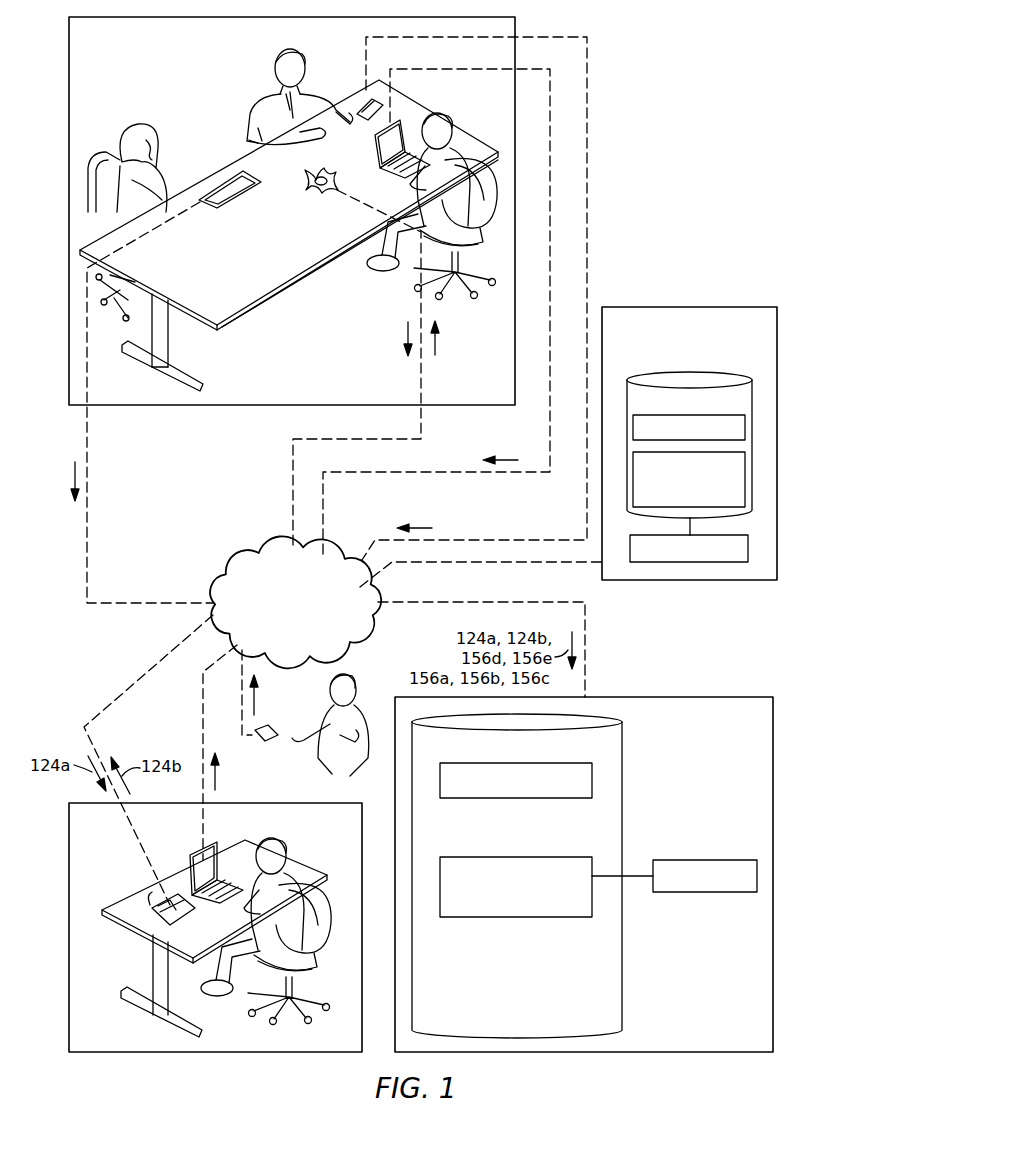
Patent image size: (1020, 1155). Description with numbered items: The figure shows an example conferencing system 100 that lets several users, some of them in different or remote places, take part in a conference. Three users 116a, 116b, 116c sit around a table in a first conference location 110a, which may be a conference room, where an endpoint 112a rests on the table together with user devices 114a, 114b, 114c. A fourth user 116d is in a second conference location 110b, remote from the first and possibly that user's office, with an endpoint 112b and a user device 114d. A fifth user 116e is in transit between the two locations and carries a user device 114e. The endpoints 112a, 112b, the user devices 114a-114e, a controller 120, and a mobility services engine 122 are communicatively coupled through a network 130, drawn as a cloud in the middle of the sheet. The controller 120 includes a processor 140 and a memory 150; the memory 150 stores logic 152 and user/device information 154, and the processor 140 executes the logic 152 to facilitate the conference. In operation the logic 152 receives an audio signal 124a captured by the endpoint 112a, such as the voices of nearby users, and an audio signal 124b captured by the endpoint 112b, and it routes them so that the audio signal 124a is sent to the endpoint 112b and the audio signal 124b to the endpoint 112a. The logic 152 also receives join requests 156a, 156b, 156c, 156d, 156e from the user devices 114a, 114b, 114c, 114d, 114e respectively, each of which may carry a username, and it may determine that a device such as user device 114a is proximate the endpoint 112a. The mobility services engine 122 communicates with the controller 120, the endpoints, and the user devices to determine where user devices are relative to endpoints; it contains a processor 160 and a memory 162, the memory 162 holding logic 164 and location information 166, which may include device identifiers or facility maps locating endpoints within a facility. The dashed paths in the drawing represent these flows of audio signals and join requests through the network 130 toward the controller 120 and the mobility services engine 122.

The conferencing system 100 is at (684, 54).
The first conference location 110a is at (124, 54).
The second conference location 110b is at (124, 1044).
The endpoint 112a is at (326, 194).
The endpoint 112b is at (150, 905).
The user device 114a is at (355, 100).
The user device 114b is at (216, 172).
The user device 114c is at (394, 115).
The user device 114d is at (190, 860).
The user device 114e is at (276, 745).
The user 116a is at (271, 80).
The user 116b is at (131, 124).
The user 116c is at (463, 140).
The user 116d is at (283, 850).
The fifth user 116e is at (348, 684).
The controller 120 is at (712, 785).
The mobility services engine 122 is at (690, 306).
The audio signal 124a is at (404, 337).
The audio signal 124b is at (438, 344).
The network 130 is at (310, 624).
The processor 140 is at (702, 893).
The memory 150 is at (622, 953).
The logic 152 is at (455, 799).
The user/device information 154 is at (515, 918).
The join request 156a is at (416, 526).
The join request 156b is at (72, 470).
The join request 156c is at (500, 458).
The join request 156d is at (219, 778).
The join request 156e is at (258, 702).
The processor 160 is at (690, 563).
The memory 162 is at (755, 398).
The logic 164 is at (748, 428).
The location information 166 is at (748, 480).